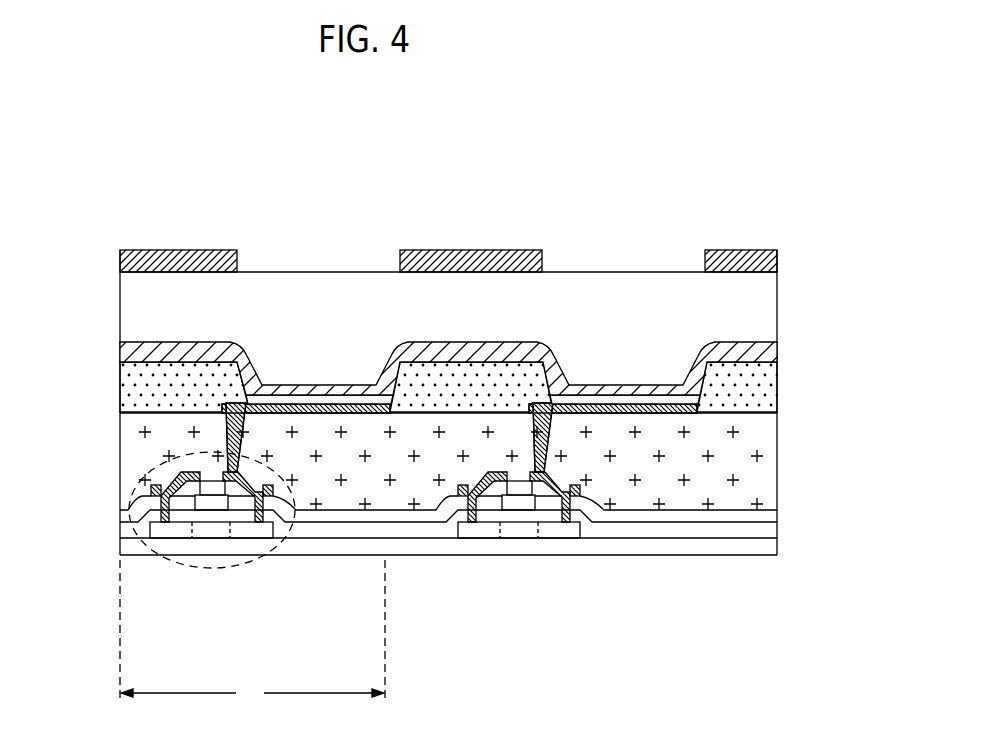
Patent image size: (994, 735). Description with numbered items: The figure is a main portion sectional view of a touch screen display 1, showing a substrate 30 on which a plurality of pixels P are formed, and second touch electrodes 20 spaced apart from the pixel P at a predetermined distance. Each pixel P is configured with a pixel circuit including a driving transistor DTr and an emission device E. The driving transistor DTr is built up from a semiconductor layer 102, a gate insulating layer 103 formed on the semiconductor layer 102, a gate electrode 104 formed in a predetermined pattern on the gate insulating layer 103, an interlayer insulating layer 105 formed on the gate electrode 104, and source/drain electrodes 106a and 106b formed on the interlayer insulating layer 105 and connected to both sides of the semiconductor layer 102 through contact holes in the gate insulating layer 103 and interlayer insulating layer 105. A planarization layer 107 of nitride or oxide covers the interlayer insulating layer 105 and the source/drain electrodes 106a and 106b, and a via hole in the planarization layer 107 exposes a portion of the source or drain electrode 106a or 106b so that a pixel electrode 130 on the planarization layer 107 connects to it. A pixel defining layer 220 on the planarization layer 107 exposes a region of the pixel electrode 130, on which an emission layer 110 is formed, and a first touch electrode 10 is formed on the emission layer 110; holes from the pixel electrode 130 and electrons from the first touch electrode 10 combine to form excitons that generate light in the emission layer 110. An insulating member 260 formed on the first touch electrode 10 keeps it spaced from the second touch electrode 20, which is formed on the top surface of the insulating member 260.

The touch screen display 1 is at (656, 228).
The first touch electrode 10 is at (283, 385).
The second touch electrode 20 is at (496, 262).
The substrate 30 is at (120, 548).
The semiconductor layer 102 is at (199, 530).
The gate insulating layer 103 is at (120, 528).
The gate electrode 104 is at (216, 500).
The interlayer insulating layer 105 is at (120, 494).
The source/drain electrode 106a is at (166, 500).
The source/drain electrode 106b is at (266, 515).
The planarization layer 107 is at (120, 432).
The emission layer 110 is at (322, 397).
The pixel electrode 130 is at (357, 405).
The pixel defining layer 220 is at (120, 387).
The insulating member 260 is at (120, 298).
The driving transistor DTr is at (294, 556).
The emission device E is at (448, 310).
The pixel P is at (252, 634).